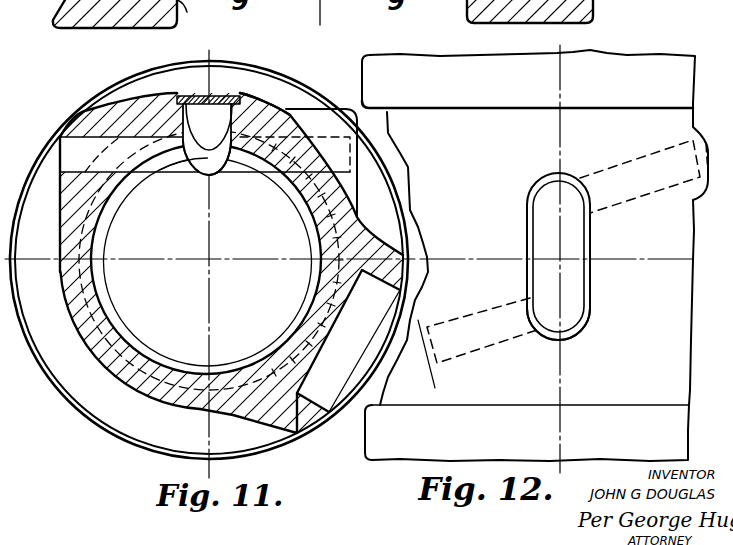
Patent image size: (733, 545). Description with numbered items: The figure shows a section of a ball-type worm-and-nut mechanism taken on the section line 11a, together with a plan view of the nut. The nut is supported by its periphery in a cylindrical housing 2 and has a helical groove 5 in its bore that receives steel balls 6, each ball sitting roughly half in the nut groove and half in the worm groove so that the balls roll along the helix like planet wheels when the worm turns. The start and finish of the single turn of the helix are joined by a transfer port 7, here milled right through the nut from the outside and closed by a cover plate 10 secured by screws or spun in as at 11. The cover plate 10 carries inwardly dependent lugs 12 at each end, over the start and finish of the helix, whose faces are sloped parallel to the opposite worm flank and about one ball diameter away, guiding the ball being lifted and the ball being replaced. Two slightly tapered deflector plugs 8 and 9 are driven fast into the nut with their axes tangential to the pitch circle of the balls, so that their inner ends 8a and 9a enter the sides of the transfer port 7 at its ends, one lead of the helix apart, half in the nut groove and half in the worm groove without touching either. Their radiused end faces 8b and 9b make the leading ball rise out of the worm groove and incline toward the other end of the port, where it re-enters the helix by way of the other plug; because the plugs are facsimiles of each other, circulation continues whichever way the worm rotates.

In FIG. 11, the cylindrical housing 2 is at (122, 358).
In FIG. 12, the cylindrical housing 2 is at (608, 67).
In FIG. 11, the helical groove of the nut 5 is at (104, 237).
In FIG. 11, the steel balls 6 is at (284, 15).
In FIG. 11, the transfer port 7 is at (217, 107).
In FIG. 11, the deflector plug 8 is at (128, 170).
In FIG. 12, the deflector plug 8 is at (446, 322).
In FIG. 11, the inner end of deflector plug 8a is at (184, 168).
In FIG. 11, the radiused end face of deflector plug 8b is at (182, 173).
In FIG. 12, the radiused end face of deflector plug 8b is at (534, 333).
In FIG. 11, the deflector plug 9 is at (260, 170).
In FIG. 12, the deflector plug 9 is at (643, 193).
In FIG. 11, the inner end of deflector plug 9a is at (223, 165).
In FIG. 11, the radiused end face of deflector plug 9b is at (222, 173).
In FIG. 12, the radiused end face of deflector plug 9b is at (578, 190).
In FIG. 11, the cover plate 10 is at (192, 97).
In FIG. 11, the spun-in securing 11 is at (247, 92).
In FIG. 11, the section line 11a is at (343, 21).
In FIG. 11, the inwardly dependent lugs 12 is at (193, 120).